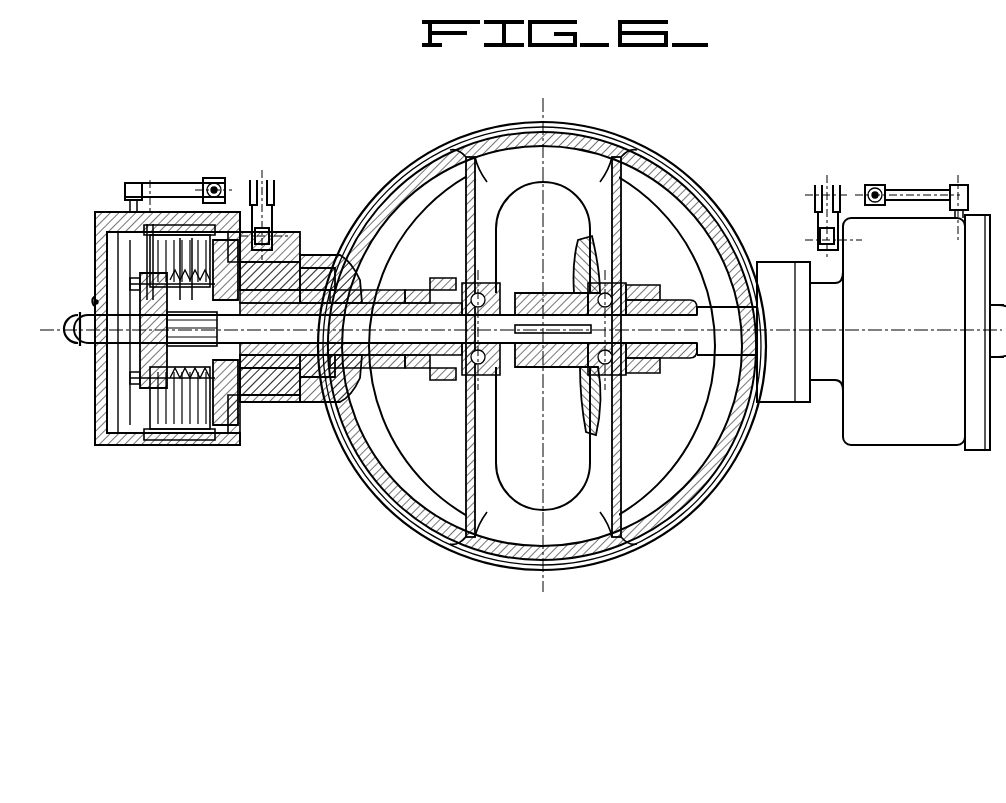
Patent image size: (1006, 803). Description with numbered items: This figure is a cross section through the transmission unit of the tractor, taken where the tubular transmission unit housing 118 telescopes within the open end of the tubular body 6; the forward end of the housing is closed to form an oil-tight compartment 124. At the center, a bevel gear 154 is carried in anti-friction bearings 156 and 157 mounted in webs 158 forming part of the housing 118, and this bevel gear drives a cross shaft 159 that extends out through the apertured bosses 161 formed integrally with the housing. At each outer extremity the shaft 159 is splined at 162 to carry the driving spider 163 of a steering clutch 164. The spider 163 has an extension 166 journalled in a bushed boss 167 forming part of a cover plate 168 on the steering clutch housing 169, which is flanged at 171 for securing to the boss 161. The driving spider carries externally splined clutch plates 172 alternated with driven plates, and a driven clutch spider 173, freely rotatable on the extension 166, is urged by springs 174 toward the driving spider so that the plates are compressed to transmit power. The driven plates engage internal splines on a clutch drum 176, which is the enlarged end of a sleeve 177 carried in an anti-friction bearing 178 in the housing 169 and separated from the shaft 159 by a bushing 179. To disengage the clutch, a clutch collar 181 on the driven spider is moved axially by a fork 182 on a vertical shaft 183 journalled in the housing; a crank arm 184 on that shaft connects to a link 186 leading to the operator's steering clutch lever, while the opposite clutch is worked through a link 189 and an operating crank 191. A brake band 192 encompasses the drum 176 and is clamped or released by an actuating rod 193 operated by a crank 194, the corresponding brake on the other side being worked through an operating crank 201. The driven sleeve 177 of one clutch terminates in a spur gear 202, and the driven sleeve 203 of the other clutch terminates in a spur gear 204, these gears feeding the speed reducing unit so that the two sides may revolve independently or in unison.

The tubular body 6 is at (484, 576).
The transmission unit housing 118 is at (393, 525).
The compartment 124 is at (546, 456).
The bevel gear 154 is at (552, 380).
The anti-friction bearing 156 is at (494, 290).
The anti-friction bearing 157 is at (618, 290).
The webs 158 is at (486, 220).
The cross shaft 159 is at (422, 365).
The bosses 161 is at (318, 258).
The splines 162 is at (192, 326).
The driving spider 163 is at (150, 395).
The steering clutch 164 is at (198, 432).
The extension 166 is at (82, 322).
The bushed boss 167 is at (94, 298).
The cover plate 168 is at (96, 237).
The steering clutch housing 169 is at (136, 437).
The flange 171 is at (270, 264).
The clutch plates 172 is at (187, 238).
The driven clutch spider 173 is at (149, 212).
The springs 174 is at (225, 240).
The clutch drum 176 is at (236, 436).
The sleeve 177 is at (392, 305).
The anti-friction bearing 178 is at (318, 404).
The bushing 179 is at (393, 350).
The clutch collar 181 is at (130, 352).
The fork 182 is at (136, 365).
The vertical shaft 183 is at (125, 206).
The crank arm 184 is at (166, 183).
The link 186 is at (214, 178).
The link 189 is at (880, 190).
The operating crank 191 is at (933, 192).
The brake band 192 is at (168, 432).
The actuating rod 193 is at (268, 236).
The crank 194 is at (270, 185).
The operating crank 201 is at (815, 206).
The spur gear 202 is at (440, 288).
The driven sleeve 203 is at (700, 352).
The spur gear 204 is at (640, 375).